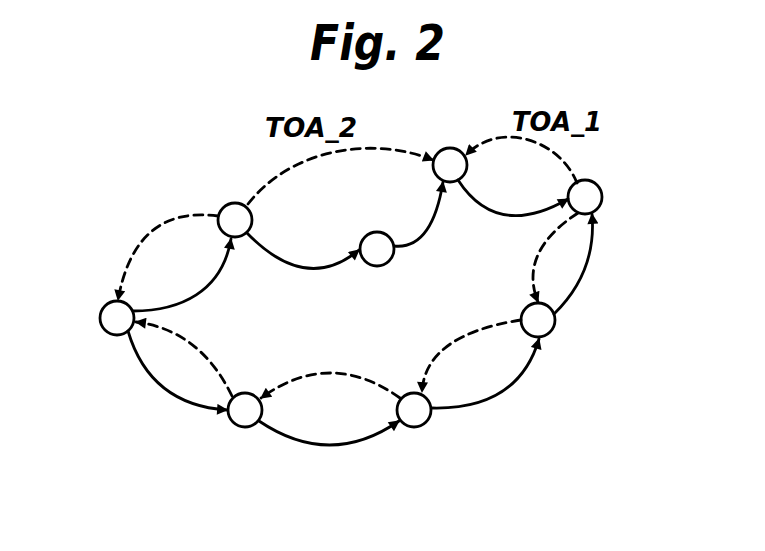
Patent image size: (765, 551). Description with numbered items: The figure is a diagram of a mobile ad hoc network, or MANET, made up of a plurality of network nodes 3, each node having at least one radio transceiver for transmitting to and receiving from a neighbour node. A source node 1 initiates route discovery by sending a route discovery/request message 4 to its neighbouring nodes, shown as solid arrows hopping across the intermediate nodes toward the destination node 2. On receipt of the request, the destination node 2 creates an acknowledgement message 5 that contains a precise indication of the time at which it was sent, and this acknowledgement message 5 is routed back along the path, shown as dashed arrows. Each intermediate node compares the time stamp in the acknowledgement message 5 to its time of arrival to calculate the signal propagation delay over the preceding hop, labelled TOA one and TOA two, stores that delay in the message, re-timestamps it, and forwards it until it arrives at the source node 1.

The source node 1 is at (84, 361).
The destination node 2 is at (633, 194).
The network node 3 is at (420, 463).
The route discovery/request message 4 is at (169, 415).
The acknowledgement message 5 is at (156, 239).